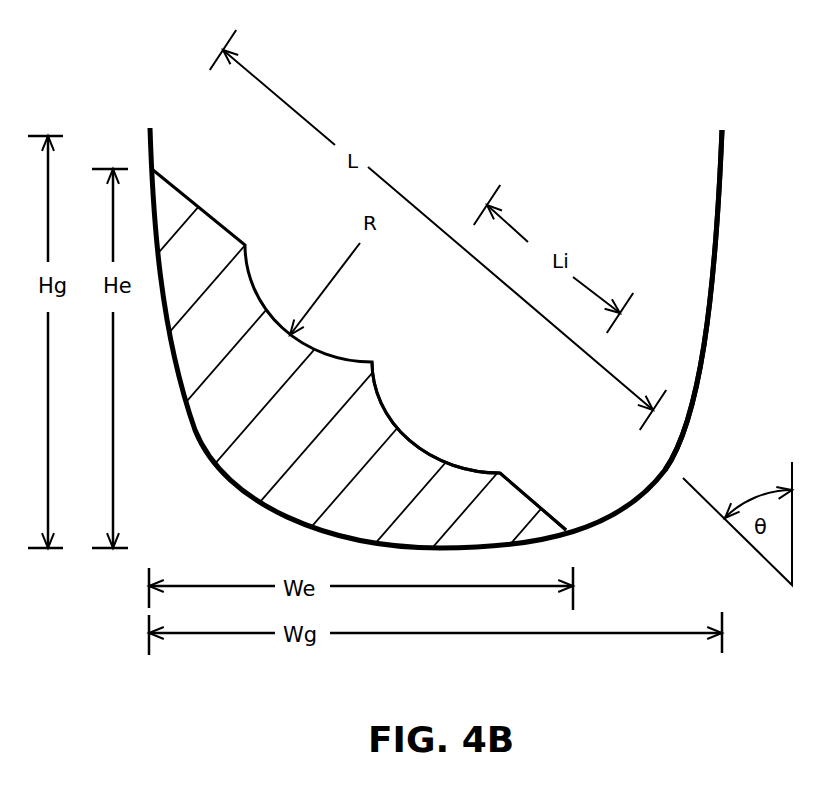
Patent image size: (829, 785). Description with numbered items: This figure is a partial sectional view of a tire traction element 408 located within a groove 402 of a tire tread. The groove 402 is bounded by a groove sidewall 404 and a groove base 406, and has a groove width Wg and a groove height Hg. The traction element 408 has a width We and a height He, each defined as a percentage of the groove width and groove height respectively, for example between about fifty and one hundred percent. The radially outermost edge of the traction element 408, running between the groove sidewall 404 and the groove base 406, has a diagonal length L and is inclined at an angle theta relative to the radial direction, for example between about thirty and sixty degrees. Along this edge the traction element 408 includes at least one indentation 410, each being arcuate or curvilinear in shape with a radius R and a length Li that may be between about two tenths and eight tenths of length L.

The groove 402 is at (447, 128).
The groove sidewall 404 is at (715, 190).
The groove base 406 is at (480, 543).
The traction element 408 is at (202, 250).
The indentation 410 is at (453, 463).